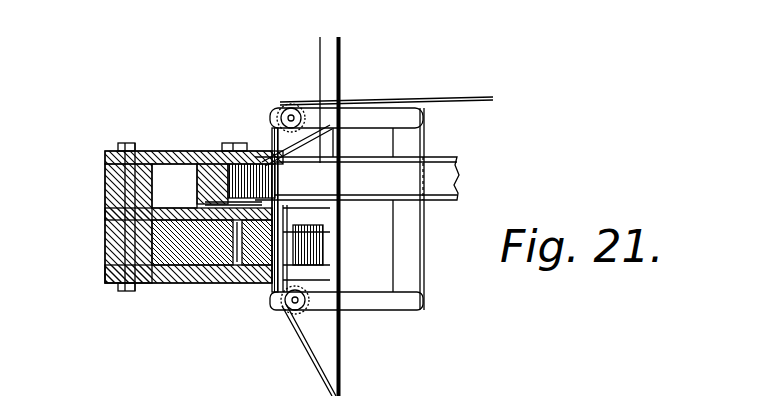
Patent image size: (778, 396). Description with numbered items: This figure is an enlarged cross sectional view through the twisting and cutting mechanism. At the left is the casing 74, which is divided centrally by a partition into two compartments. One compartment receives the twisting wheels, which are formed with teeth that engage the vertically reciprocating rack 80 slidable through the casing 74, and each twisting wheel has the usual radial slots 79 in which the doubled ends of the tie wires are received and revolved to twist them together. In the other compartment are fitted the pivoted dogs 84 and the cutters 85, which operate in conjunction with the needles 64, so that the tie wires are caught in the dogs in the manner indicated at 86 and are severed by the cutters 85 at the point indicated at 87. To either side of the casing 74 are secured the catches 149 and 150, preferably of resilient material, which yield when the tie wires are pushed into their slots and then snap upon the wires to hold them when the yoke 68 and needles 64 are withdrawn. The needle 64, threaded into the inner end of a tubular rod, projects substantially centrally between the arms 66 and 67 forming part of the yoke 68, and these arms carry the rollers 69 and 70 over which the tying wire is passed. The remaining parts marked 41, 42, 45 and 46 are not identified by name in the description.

The casing 74 is at (103, 153).
The partition wall 45 is at (105, 222).
The cutters 85 is at (183, 194).
The pivoted dogs 84 is at (212, 158).
The catch 149 is at (248, 143).
The vertically reciprocating rack 80 is at (168, 282).
The block 46 is at (175, 253).
The catch 150 is at (247, 283).
The post 42 is at (272, 306).
The severing point 87 is at (277, 233).
The radial slots 79 is at (313, 250).
The arm 67 is at (385, 115).
The yoke 68 is at (413, 265).
The arm 66 is at (368, 297).
The roller 70 is at (285, 106).
The wire-catching point 86 is at (330, 125).
The bar 41 is at (495, 102).
The needles 64 is at (380, 153).
The roller 69 is at (297, 313).